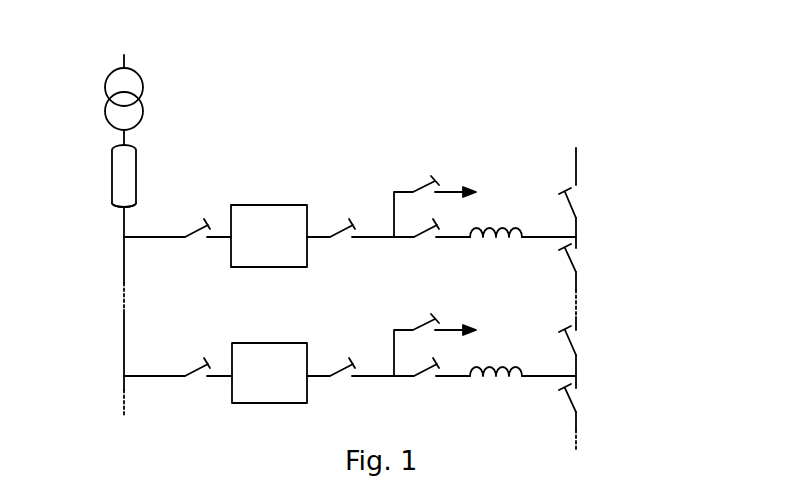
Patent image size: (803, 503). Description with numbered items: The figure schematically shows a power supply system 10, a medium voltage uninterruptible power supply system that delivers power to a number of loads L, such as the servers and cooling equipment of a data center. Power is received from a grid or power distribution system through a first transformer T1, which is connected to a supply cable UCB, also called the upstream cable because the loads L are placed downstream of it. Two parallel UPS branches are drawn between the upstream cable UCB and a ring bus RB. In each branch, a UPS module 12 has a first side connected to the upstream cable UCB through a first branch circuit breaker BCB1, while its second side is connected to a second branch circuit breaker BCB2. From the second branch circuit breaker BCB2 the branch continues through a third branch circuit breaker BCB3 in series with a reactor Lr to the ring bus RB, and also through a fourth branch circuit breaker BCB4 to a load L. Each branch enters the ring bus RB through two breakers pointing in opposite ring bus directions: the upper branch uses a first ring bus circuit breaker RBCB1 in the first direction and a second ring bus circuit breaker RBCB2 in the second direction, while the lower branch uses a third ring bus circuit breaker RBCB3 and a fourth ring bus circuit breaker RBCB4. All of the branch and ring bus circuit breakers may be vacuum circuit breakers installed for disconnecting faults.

The power supply system 10 is at (371, 110).
The UPS module 12 is at (298, 205).
The first transformer T1 is at (104, 99).
The supply cable UCB is at (159, 176).
The first branch circuit breaker BCB1 is at (188, 316).
The second branch circuit breaker BCB2 is at (350, 316).
The third branch circuit breaker BCB3 is at (433, 316).
The fourth branch circuit breaker BCB4 is at (435, 262).
The load L is at (498, 266).
The reactor Lr is at (496, 318).
The ring bus RB is at (574, 281).
The first ring bus circuit breaker RBCB1 is at (611, 199).
The second ring bus circuit breaker RBCB2 is at (611, 259).
The third ring bus circuit breaker RBCB3 is at (618, 340).
The fourth ring bus circuit breaker RBCB4 is at (614, 402).